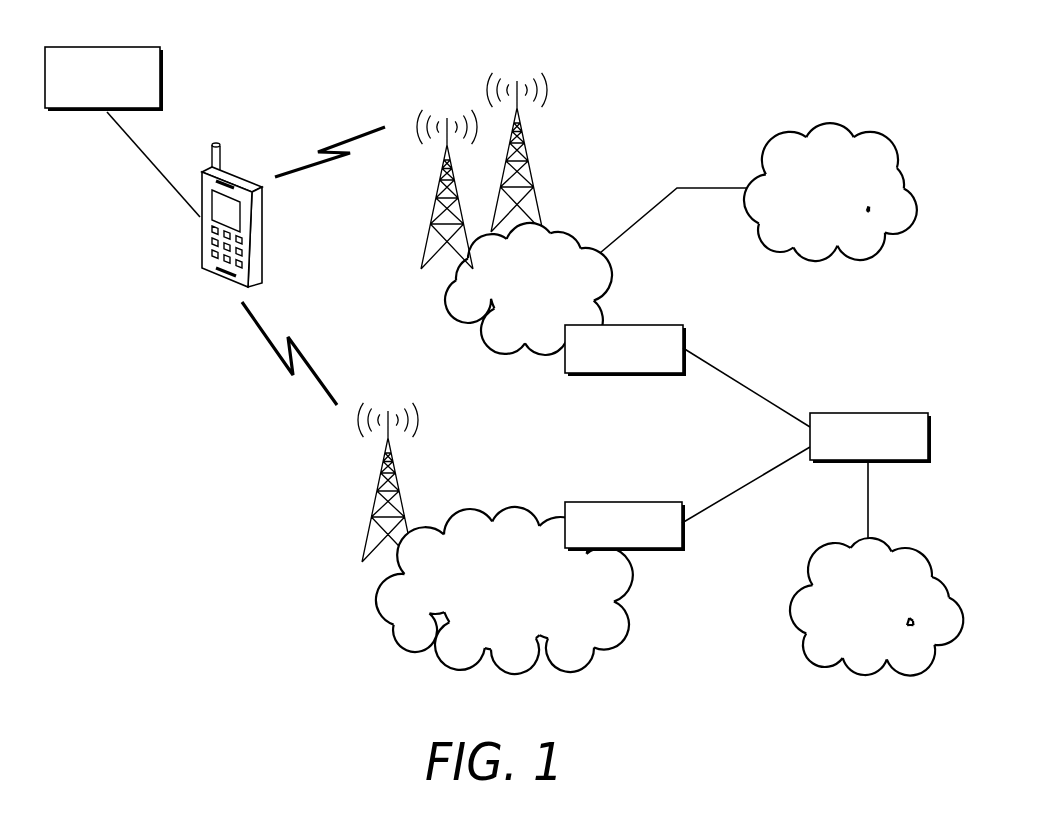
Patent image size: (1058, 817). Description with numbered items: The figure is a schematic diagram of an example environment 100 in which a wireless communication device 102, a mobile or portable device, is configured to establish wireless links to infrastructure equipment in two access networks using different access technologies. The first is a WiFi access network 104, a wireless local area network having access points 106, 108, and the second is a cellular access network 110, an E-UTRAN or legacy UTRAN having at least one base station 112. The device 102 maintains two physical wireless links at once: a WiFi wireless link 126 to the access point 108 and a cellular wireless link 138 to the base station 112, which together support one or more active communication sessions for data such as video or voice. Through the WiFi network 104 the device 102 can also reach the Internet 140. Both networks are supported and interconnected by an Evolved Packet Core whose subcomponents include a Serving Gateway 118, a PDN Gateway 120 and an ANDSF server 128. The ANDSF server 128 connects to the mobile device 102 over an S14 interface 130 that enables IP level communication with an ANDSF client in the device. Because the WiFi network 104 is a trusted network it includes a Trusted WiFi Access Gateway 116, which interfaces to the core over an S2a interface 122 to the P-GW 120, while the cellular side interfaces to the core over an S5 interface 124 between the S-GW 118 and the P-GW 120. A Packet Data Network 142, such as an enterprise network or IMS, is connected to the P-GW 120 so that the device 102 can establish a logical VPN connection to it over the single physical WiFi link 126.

The environment 100 is at (723, 63).
The wireless communication device 102 is at (202, 240).
The access network 104 is at (562, 224).
The access point 106 is at (532, 169).
The access point 108 is at (433, 208).
The access network 110 is at (486, 508).
The base station 112 is at (373, 498).
The Trusted WiFi Access Gateway 116 is at (668, 325).
The Serving Gateway 118 is at (622, 502).
The PDN Gateway 120 is at (868, 413).
The S2a interface 122 is at (745, 386).
The S5 interface 124 is at (745, 487).
The wireless link 126 is at (352, 134).
The ANDSF server 128 is at (103, 47).
The S14 interface 130 is at (152, 163).
The wireless link 138 is at (268, 345).
The Internet 140 is at (823, 122).
The Packet Data Network 142 is at (793, 584).